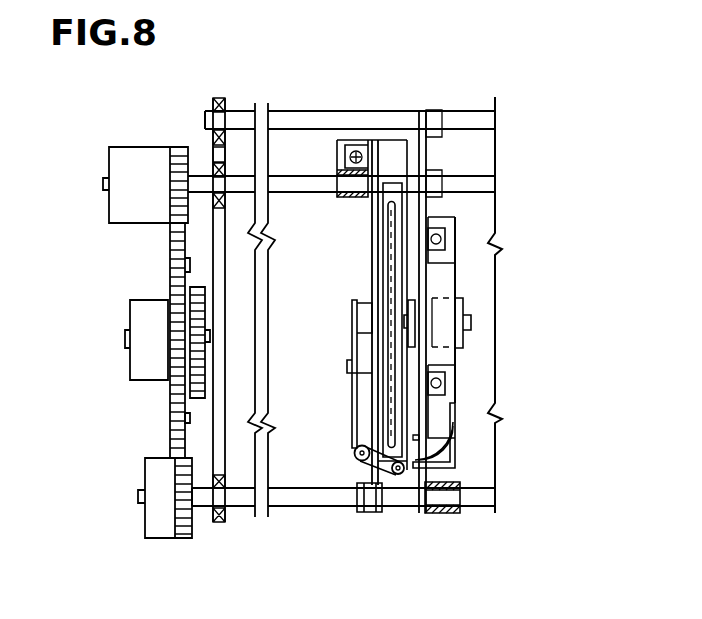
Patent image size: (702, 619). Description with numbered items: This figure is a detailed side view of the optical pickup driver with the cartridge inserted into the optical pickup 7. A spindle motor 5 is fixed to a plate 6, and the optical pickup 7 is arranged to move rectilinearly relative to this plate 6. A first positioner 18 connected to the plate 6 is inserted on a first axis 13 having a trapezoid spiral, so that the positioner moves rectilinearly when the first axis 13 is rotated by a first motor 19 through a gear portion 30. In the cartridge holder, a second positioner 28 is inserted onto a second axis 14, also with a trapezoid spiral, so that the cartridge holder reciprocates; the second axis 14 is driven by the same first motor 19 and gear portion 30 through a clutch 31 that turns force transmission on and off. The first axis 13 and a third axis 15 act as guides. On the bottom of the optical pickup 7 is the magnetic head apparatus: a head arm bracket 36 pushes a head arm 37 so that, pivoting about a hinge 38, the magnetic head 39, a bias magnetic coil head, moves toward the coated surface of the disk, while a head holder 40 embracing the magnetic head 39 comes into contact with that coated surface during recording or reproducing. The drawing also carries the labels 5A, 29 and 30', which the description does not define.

The spindle motor 5 is at (463, 342).
The pin block 5A is at (406, 292).
The plate 6 is at (425, 147).
The optical pickup 7 is at (456, 378).
The first axis 13 is at (482, 506).
The second axis 14 is at (480, 176).
The third axis 15 is at (308, 110).
The first positioner 18 is at (440, 514).
The first motor 19 is at (126, 360).
The second positioner 28 is at (354, 197).
The vertical bar 29 is at (372, 250).
The gear portion 30 is at (132, 398).
The rack 30' is at (115, 340).
The clutch 31 is at (119, 147).
The head arm bracket 36 is at (457, 440).
The head arm 37 is at (365, 512).
The hinge 38 is at (357, 458).
The magnetic head 39 is at (406, 323).
The head holder 40 is at (352, 338).